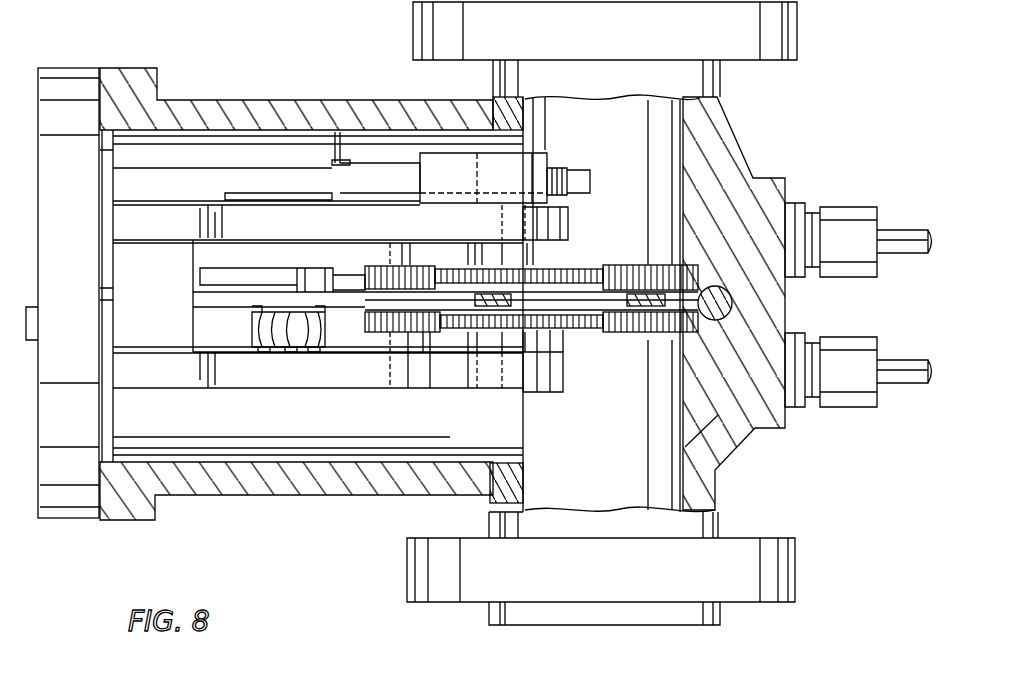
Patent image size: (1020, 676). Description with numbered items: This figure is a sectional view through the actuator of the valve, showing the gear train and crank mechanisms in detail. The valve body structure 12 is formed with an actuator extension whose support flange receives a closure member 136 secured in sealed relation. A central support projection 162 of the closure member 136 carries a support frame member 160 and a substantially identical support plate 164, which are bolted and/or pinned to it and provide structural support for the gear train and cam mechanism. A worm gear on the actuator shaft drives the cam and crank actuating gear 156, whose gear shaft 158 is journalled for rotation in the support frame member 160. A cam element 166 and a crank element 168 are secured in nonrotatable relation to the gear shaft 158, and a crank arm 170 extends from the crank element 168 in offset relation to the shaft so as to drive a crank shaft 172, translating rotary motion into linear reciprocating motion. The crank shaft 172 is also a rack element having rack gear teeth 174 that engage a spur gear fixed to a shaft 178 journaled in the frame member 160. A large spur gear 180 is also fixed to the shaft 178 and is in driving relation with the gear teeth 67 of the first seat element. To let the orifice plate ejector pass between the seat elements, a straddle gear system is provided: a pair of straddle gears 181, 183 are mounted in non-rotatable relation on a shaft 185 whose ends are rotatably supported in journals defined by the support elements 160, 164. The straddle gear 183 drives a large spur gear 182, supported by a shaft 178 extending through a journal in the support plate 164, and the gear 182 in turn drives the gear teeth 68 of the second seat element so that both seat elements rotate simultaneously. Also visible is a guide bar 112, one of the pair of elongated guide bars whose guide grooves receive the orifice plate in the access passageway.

The valve body structure 12 is at (240, 483).
The gear teeth 67 is at (665, 282).
The gear teeth 68 is at (753, 430).
The guide bar 112 is at (787, 202).
The closure member 136 is at (72, 68).
The cam and crank actuating gear 156 is at (293, 338).
The gear shaft 158 is at (200, 296).
The support frame member 160 is at (125, 218).
The support projection 162 is at (157, 322).
The support plate 164 is at (347, 378).
The cam element 166 is at (213, 275).
The crank element 168 is at (240, 194).
The crank arm 170 is at (337, 130).
The crank shaft 172 is at (388, 170).
The rack gear teeth 174 is at (563, 180).
The shaft 178 is at (503, 370).
The large spur gear 180 is at (557, 280).
The straddle gear 181 is at (378, 268).
The large spur gear 182 is at (553, 327).
The straddle gear 183 is at (427, 333).
The shaft 185 is at (392, 342).